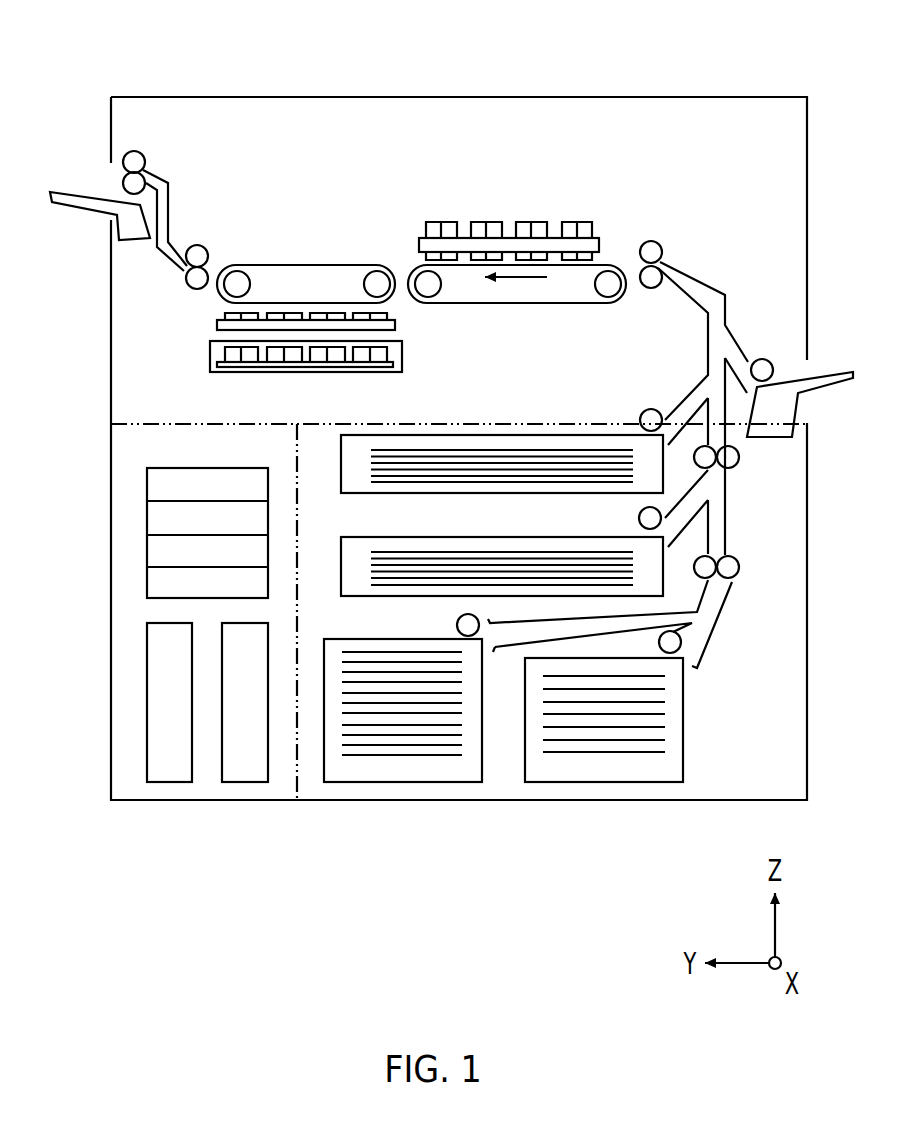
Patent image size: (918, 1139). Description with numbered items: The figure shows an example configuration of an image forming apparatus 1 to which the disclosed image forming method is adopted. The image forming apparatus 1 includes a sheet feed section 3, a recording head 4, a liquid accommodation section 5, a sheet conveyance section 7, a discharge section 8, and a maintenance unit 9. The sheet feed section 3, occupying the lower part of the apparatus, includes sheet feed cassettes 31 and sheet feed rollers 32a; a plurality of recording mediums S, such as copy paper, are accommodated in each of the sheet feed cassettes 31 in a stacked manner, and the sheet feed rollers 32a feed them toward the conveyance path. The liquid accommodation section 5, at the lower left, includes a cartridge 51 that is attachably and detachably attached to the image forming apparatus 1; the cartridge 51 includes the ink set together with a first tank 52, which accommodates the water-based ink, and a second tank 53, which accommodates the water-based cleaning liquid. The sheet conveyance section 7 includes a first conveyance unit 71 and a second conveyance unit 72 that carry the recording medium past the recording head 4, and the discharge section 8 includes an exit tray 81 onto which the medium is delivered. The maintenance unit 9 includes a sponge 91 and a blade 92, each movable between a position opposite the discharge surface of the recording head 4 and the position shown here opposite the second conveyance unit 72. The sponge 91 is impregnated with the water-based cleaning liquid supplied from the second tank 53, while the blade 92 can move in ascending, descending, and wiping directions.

The image forming apparatus 1 is at (734, 76).
The sheet feed section 3 is at (706, 763).
The sheet feed cassette 31 is at (407, 494).
The sheet feed roller 32a is at (652, 410).
The recording medium S is at (388, 483).
The recording head 4 is at (598, 188).
The liquid accommodation section 5 is at (79, 627).
The cartridge 51 is at (70, 653).
The first tank 52 is at (151, 606).
The second tank 53 is at (147, 727).
The sheet conveyance section 7 is at (737, 261).
The first conveyance unit 71 is at (622, 256).
The second conveyance unit 72 is at (244, 231).
The discharge section 8 is at (96, 170).
The exit tray 81 is at (80, 208).
The maintenance unit 9 is at (125, 331).
The sponge 91 is at (203, 321).
The blade 92 is at (210, 384).